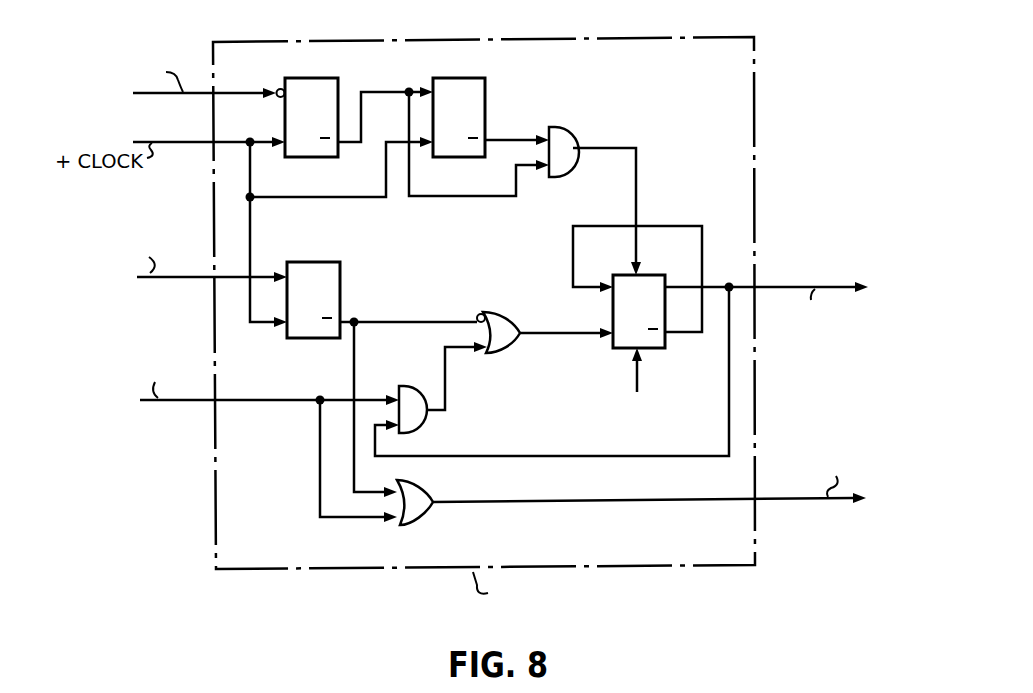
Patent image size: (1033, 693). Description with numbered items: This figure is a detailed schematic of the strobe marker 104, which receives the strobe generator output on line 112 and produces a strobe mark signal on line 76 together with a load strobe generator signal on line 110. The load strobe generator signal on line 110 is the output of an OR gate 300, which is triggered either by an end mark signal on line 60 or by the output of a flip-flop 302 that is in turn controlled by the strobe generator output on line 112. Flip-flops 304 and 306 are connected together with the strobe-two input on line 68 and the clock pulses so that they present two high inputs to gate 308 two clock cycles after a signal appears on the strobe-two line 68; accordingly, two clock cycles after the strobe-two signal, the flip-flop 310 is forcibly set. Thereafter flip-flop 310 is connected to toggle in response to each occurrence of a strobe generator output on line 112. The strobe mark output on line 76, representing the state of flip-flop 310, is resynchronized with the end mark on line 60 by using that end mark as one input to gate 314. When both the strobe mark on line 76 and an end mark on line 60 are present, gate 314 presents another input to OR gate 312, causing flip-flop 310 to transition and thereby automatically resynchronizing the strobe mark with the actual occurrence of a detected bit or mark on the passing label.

The OR gate 300 is at (421, 517).
The flip-flop 302 is at (318, 262).
The flip-flop 304 is at (316, 77).
The flip-flop 306 is at (467, 77).
The gate 308 is at (563, 140).
The flip-flop 310 is at (614, 309).
The OR gate 312 is at (507, 350).
The gate 314 is at (421, 421).
The line 76 is at (778, 285).
The strobe marker 104 is at (755, 372).
The line 68 is at (141, 96).
The line 112 is at (185, 278).
The line 60 is at (185, 402).
The line 110 is at (800, 503).